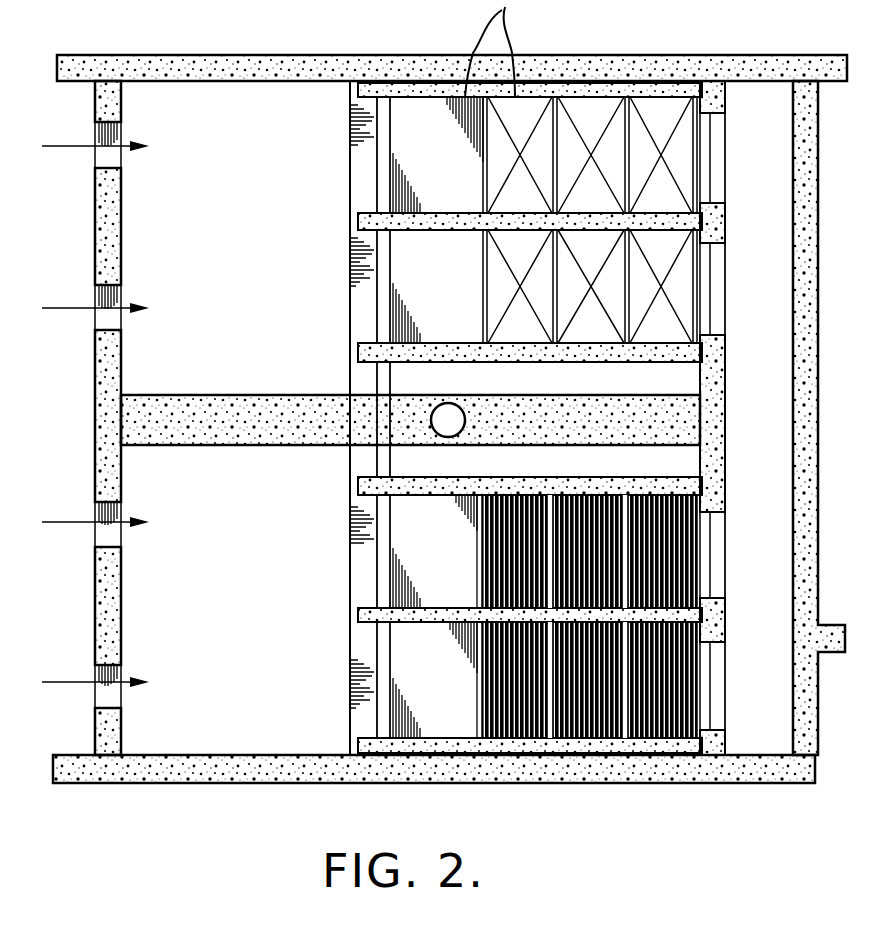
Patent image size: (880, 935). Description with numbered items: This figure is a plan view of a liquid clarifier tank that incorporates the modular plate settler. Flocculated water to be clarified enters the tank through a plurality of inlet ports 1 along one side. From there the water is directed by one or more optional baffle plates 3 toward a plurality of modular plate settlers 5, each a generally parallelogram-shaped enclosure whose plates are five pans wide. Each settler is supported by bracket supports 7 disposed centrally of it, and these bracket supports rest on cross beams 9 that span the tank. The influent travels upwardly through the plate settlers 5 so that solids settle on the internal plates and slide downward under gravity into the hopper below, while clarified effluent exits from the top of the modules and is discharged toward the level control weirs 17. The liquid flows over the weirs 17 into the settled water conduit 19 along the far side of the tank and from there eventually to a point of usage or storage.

The inlet ports 1 is at (97, 133).
The baffle plates 3 is at (350, 188).
The modular plate settlers 5 is at (431, 705).
The bracket supports 7 is at (443, 661).
The cross beams 9 is at (400, 496).
The level control weirs 17 is at (720, 138).
The settled water conduit 19 is at (766, 431).